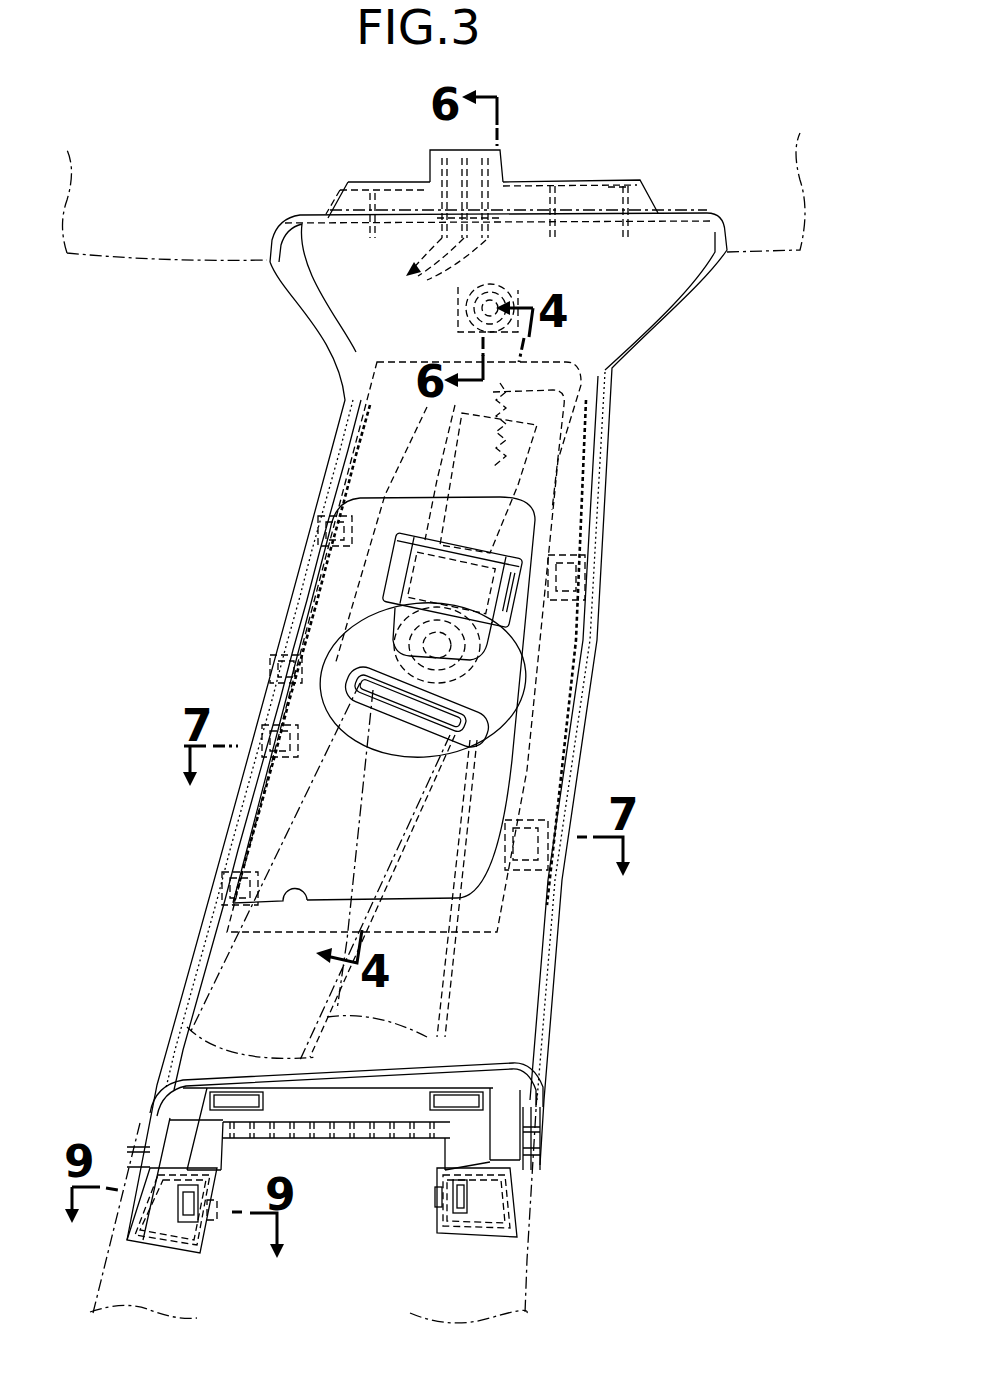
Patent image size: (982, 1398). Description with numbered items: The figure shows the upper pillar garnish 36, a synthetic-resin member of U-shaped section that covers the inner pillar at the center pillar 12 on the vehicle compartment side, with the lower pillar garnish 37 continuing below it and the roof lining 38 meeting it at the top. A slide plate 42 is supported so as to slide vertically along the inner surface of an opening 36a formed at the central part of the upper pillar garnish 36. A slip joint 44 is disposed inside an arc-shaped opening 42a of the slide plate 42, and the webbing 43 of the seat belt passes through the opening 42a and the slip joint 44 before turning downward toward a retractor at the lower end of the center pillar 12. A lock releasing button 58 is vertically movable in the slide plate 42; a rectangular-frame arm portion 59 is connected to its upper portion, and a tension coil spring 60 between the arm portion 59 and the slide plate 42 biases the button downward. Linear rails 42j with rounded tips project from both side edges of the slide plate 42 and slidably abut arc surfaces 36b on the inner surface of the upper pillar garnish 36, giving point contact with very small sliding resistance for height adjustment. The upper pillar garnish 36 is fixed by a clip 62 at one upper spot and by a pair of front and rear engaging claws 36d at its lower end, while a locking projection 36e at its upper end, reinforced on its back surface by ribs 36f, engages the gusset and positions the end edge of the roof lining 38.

The center pillar 12 is at (637, 657).
The upper pillar garnish 36 is at (610, 464).
The opening 36a is at (283, 903).
The arc surfaces 36b is at (318, 530).
The engaging claws 36d is at (207, 1215).
The locking projection 36e is at (502, 150).
The ribs 36f is at (568, 202).
The lower pillar garnish 37 is at (527, 1272).
The roof lining 38 is at (150, 247).
The slide plate 42 is at (495, 945).
The arc-shaped opening 42a is at (347, 608).
The linear rails 42j is at (345, 468).
The webbing 43 is at (287, 820).
The slip joint 44 is at (347, 680).
The lock releasing button 58 is at (430, 706).
The arm portion 59 is at (390, 441).
The tension coil spring 60 is at (465, 428).
The clip 62 is at (503, 290).